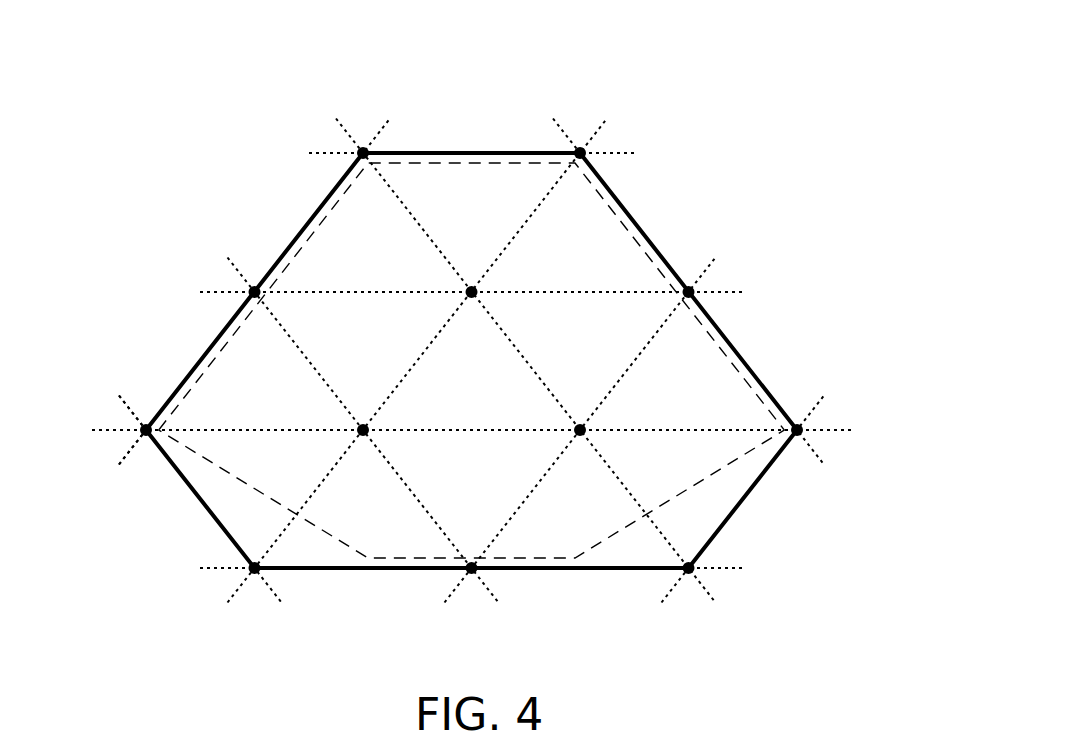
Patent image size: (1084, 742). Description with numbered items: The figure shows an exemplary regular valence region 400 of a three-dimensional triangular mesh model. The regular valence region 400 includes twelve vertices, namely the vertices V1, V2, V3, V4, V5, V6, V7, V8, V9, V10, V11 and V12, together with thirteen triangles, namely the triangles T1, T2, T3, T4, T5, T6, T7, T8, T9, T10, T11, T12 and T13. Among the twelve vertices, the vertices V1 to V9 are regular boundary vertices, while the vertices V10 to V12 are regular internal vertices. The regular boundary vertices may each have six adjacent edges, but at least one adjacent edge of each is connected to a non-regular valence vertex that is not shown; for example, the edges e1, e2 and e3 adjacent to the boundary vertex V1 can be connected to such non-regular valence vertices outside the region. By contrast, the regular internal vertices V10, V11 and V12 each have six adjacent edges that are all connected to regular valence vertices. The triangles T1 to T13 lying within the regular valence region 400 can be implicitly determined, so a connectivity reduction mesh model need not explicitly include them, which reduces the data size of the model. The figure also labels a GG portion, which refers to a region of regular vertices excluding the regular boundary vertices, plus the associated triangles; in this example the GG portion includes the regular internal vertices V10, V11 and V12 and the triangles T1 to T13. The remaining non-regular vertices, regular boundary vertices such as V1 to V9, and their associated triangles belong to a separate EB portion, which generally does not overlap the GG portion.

The regular valence region 400 is at (766, 84).
The GG portion GG is at (722, 514).
The regular boundary vertex V1 is at (148, 406).
The regular boundary vertex V2 is at (253, 270).
The regular boundary vertex V3 is at (335, 172).
The regular boundary vertex V4 is at (605, 172).
The regular boundary vertex V5 is at (715, 311).
The regular boundary vertex V6 is at (823, 447).
The regular boundary vertex V7 is at (717, 584).
The regular boundary vertex V8 is at (498, 584).
The regular boundary vertex V9 is at (224, 584).
The regular internal vertex V10 is at (507, 277).
The regular internal vertex V11 is at (402, 412).
The regular internal vertex V12 is at (618, 412).
The triangle T1 is at (367, 251).
The triangle T2 is at (471, 201).
The triangle T3 is at (582, 251).
The triangle T4 is at (256, 388).
The triangle T5 is at (364, 343).
The triangle T6 is at (474, 388).
The triangle T7 is at (579, 341).
The triangle T8 is at (692, 386).
The triangle T9 is at (251, 480).
The triangle T10 is at (368, 528).
The triangle T11 is at (476, 480).
The triangle T12 is at (586, 528).
The triangle T13 is at (689, 480).
The adjacent edge e1 is at (116, 388).
The adjacent edge e2 is at (102, 428).
The adjacent edge e3 is at (116, 468).